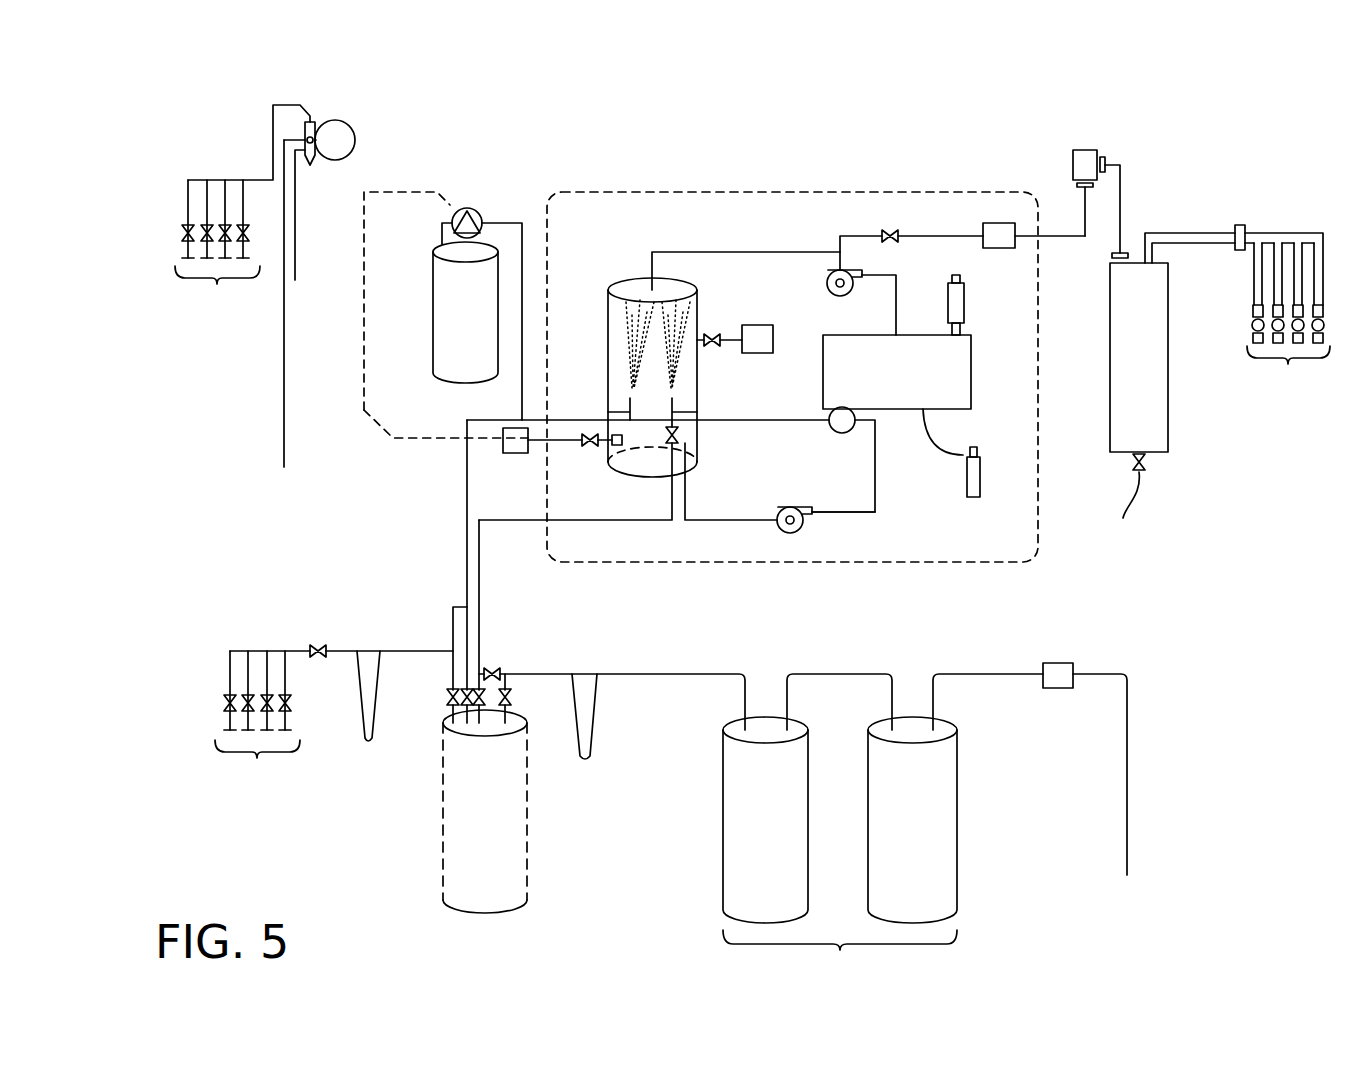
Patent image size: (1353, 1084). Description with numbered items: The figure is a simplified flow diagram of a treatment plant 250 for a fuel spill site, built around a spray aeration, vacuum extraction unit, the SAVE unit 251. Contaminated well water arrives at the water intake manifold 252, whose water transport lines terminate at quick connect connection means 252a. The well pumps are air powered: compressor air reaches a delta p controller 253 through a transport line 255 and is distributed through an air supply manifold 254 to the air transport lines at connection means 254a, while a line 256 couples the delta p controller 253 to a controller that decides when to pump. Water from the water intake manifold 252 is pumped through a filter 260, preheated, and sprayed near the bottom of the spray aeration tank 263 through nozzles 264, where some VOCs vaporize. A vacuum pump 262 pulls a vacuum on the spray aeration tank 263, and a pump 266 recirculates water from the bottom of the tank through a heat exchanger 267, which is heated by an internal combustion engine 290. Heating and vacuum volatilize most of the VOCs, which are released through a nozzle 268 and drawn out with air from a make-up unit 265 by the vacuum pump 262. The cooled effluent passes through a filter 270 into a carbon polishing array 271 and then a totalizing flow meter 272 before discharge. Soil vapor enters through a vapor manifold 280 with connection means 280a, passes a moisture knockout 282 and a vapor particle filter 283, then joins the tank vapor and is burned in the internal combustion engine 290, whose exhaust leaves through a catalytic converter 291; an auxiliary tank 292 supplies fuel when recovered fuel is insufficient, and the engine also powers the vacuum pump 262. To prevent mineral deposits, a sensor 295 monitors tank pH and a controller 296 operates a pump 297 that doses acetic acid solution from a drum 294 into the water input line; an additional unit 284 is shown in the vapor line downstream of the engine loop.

The treatment plant 250 is at (735, 120).
The SAVE unit 251 is at (855, 192).
The water intake manifold 252 is at (257, 651).
The connection means 252a is at (257, 763).
The delta p controller 253 is at (356, 140).
The air supply manifold 254 is at (214, 180).
The connection means 254a is at (217, 288).
The transport line 255 is at (285, 372).
The line 256 is at (296, 205).
The filter 260 is at (374, 726).
The vacuum pump 262 is at (850, 296).
The spray aeration tank 263 is at (628, 282).
The nozzles 264 is at (608, 412).
The make-up unit 265 is at (750, 325).
The pump 266 is at (790, 507).
The heat exchanger 267 is at (842, 433).
The nozzle 268 is at (697, 412).
The filter 270 is at (596, 740).
The carbon polishing array 271 is at (883, 828).
The totalizing flow meter 272 is at (1060, 690).
The vapor manifold 280 is at (1295, 233).
The connection means 280a is at (1288, 349).
The moisture knockout 282 is at (1170, 390).
The vapor particle filter 283 is at (1078, 150).
The filter unit 284 is at (985, 223).
The internal combustion engine 290 is at (972, 386).
The catalytic converter 291 is at (965, 318).
The auxiliary tank 292 is at (962, 486).
The drum 294 is at (433, 308).
The sensor 295 is at (612, 448).
The controller 296 is at (512, 455).
The pump 297 is at (467, 208).